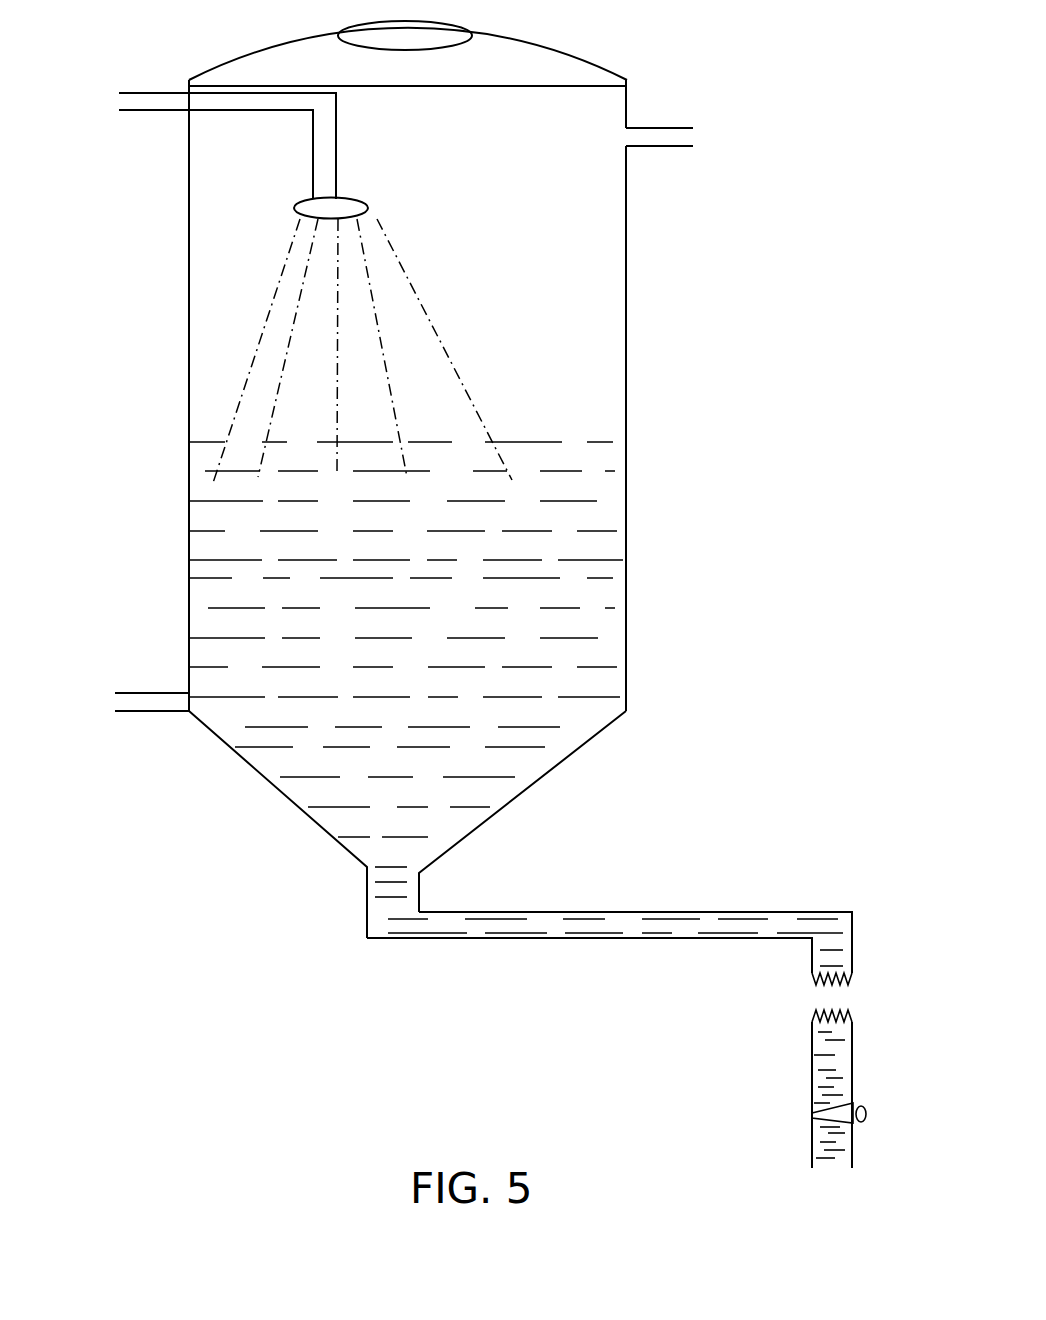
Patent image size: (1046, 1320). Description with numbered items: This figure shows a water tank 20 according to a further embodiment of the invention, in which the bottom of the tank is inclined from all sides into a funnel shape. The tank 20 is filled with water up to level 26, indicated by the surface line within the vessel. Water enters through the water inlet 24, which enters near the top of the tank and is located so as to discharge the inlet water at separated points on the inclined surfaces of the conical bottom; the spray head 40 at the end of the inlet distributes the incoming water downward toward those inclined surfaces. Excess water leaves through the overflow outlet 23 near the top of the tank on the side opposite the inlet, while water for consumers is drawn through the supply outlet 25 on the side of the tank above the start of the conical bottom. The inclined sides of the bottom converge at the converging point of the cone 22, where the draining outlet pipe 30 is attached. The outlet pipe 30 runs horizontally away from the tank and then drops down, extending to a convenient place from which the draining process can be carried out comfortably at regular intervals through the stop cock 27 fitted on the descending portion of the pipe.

The water tank 20 is at (626, 247).
The converging point of the cone 22 is at (419, 873).
The overflow outlet 23 is at (660, 128).
The water inlet 24 is at (150, 92).
The supply outlet for consumers 25 is at (145, 692).
The water level 26 is at (532, 443).
The stop cock 27 is at (859, 1089).
The draining outlet pipe 30 is at (605, 912).
The spray nozzle 40 is at (370, 209).